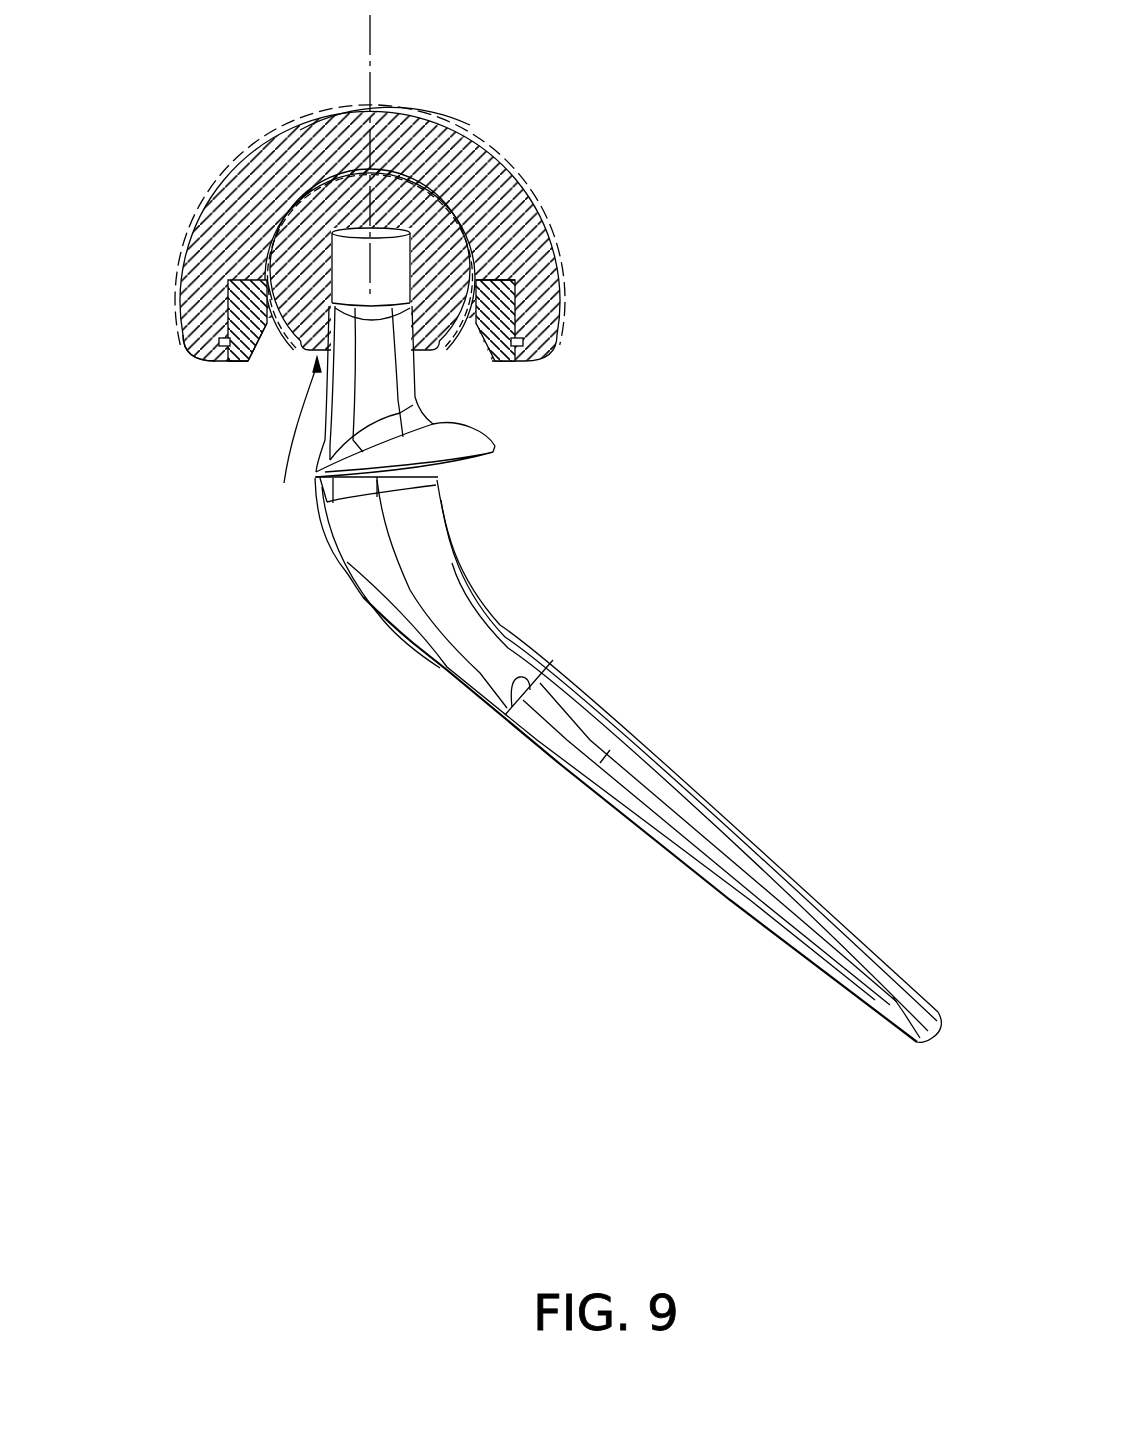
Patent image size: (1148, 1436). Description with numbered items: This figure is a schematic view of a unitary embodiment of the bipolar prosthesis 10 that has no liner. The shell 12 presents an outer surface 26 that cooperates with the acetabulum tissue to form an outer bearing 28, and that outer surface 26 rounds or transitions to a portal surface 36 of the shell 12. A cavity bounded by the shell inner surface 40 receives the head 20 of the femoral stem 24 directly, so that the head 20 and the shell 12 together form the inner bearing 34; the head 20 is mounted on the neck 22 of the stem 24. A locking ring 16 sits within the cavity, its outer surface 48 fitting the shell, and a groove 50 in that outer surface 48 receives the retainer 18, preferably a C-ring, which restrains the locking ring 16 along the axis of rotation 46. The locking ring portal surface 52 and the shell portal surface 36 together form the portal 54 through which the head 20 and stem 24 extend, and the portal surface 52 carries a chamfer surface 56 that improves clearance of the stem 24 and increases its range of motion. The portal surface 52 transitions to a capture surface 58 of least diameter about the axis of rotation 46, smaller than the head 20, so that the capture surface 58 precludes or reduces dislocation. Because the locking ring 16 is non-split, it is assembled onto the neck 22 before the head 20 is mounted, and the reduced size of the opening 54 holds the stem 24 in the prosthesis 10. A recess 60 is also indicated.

The bipolar prosthesis 10 is at (530, 528).
The shell 12 is at (540, 213).
The locking ring 16 is at (563, 327).
The retainer 18 is at (530, 337).
The head 20 is at (438, 246).
The neck 22 is at (400, 390).
The femoral stem 24 is at (545, 551).
The outer surface 26 is at (460, 127).
The outer bearing 28 is at (306, 110).
The inner bearing 34 is at (283, 222).
The portal surface 36 is at (212, 365).
The shell inner surface 40 is at (268, 255).
The axis of rotation 46 is at (372, 80).
The outer surface of locking ring 48 is at (517, 290).
The groove 50 is at (230, 363).
The locking ring portal surface 52 is at (243, 363).
The portal 54 is at (290, 435).
The chamfer surface 56 is at (211, 355).
The capture surface 58 is at (267, 324).
The recess 60 is at (282, 284).